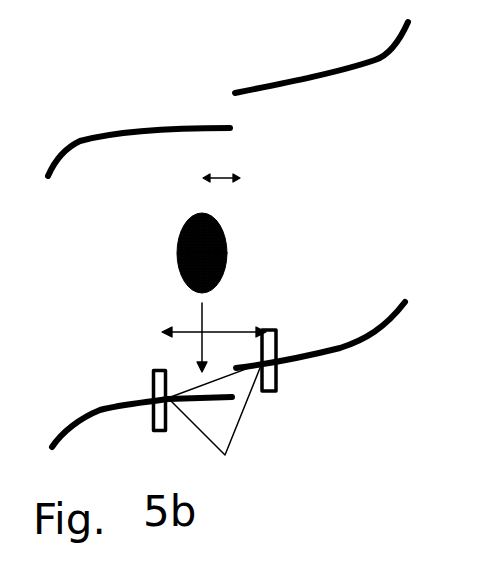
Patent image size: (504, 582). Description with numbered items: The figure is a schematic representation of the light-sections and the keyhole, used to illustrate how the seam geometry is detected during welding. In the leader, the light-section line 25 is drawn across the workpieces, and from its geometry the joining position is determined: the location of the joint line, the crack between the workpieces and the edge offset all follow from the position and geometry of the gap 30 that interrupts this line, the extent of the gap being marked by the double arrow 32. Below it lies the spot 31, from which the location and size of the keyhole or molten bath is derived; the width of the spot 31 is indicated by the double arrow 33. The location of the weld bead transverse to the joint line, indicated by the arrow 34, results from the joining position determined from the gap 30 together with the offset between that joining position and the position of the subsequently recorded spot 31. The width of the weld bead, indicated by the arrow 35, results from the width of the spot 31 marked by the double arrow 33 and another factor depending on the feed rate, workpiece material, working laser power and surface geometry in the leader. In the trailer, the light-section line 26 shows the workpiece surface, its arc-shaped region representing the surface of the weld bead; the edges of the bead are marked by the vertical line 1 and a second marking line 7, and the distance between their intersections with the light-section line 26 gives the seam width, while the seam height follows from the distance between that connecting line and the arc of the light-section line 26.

The light-section line 25 is at (393, 50).
The light-section line 26 is at (386, 334).
The gap 30 is at (230, 116).
The spot 31 is at (218, 221).
The gap 32 is at (222, 176).
The double arrow 33 is at (228, 245).
The arrow 34 is at (203, 318).
The arrow 35 is at (190, 330).
The vertical line 1 is at (150, 422).
The second optical element 7 is at (278, 388).